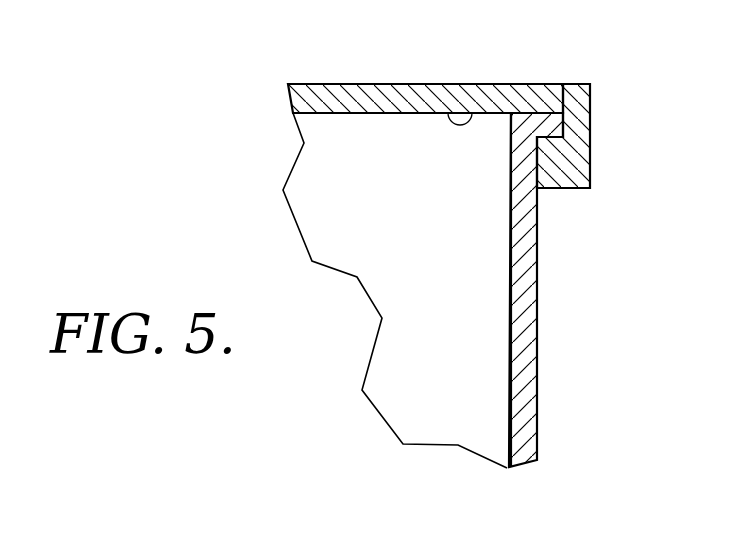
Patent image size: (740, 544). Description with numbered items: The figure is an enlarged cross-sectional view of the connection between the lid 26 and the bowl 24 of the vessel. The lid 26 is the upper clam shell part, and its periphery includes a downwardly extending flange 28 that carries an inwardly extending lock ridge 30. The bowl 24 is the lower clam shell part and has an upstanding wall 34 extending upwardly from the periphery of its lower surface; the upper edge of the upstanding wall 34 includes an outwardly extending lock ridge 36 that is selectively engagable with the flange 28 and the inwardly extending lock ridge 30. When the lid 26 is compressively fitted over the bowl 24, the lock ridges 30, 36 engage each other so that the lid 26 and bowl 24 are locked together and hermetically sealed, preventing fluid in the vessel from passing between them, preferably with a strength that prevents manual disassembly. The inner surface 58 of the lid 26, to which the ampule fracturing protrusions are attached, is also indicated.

The bowl 24 is at (537, 410).
The lid 26 is at (388, 83).
The flange 28 is at (590, 118).
The inwardly extending lock ridge 30 is at (553, 136).
The upstanding wall 34 is at (510, 305).
The outwardly extending lock ridge 36 is at (574, 114).
The inner surface 58 is at (464, 112).